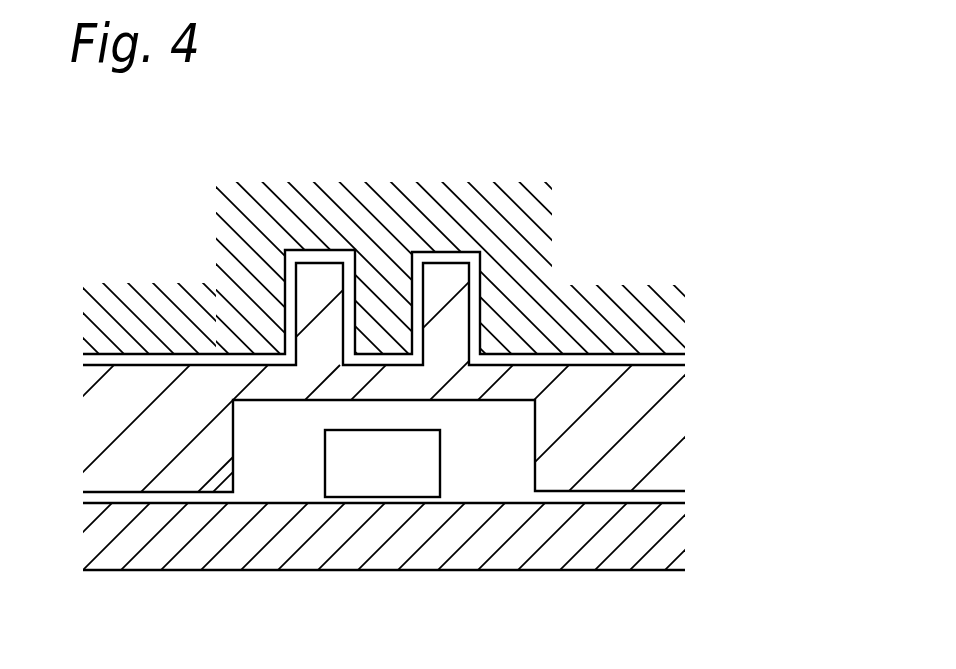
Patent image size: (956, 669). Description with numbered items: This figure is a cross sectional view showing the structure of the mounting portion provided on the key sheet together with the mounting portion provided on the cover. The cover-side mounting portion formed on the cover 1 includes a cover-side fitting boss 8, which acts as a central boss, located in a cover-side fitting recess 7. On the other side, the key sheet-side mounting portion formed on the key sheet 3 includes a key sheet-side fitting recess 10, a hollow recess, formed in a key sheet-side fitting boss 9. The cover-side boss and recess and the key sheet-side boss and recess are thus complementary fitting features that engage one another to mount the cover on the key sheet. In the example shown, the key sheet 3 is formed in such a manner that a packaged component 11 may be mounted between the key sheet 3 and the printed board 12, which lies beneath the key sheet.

The cover 1 is at (622, 320).
The key sheet 3 is at (620, 422).
The cover-side fitting recess 7 is at (385, 322).
The cover-side fitting boss 8 is at (287, 279).
The key sheet-side fitting boss 9 is at (322, 332).
The key sheet-side fitting recess 10 is at (383, 365).
The packaged component 11 is at (392, 472).
The printed board 12 is at (613, 533).